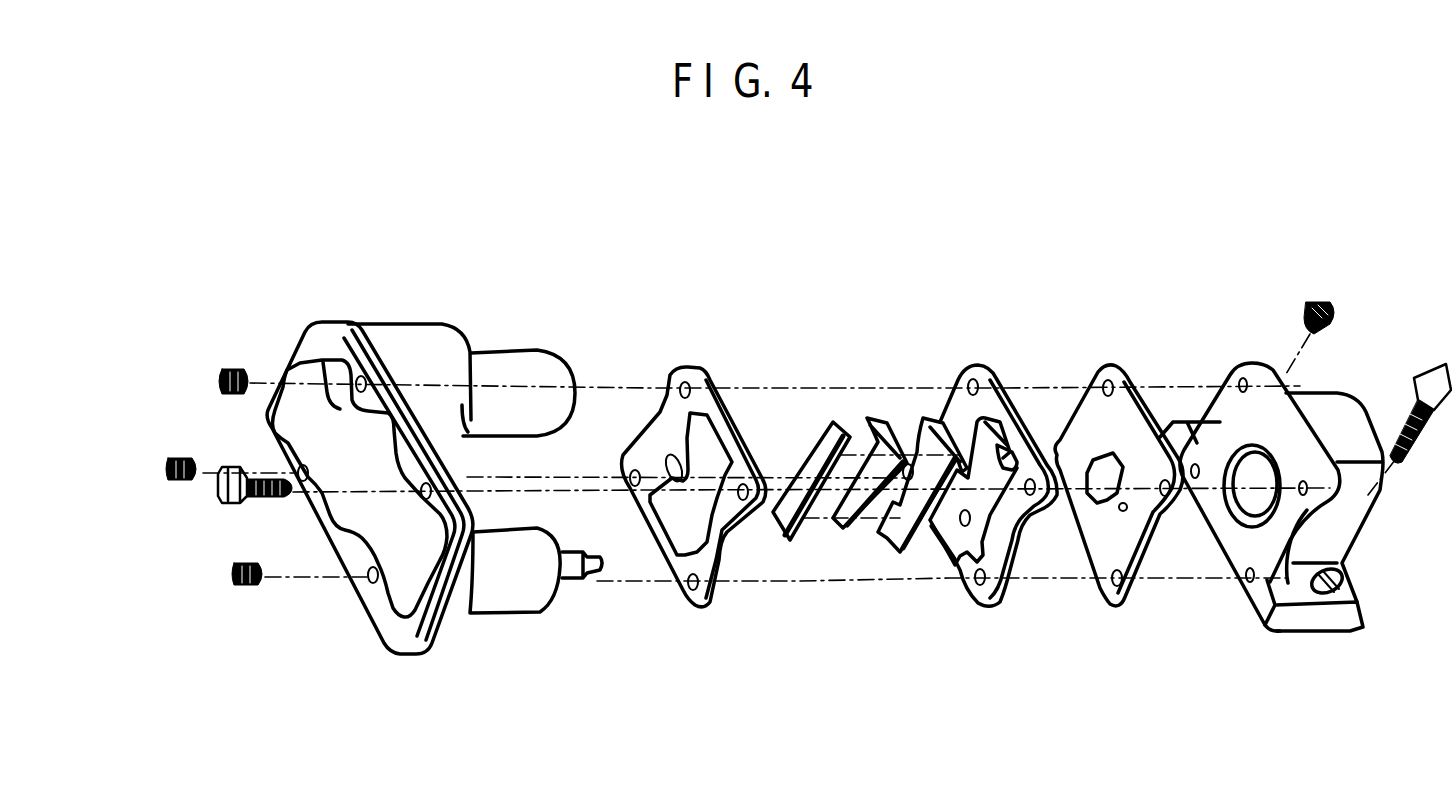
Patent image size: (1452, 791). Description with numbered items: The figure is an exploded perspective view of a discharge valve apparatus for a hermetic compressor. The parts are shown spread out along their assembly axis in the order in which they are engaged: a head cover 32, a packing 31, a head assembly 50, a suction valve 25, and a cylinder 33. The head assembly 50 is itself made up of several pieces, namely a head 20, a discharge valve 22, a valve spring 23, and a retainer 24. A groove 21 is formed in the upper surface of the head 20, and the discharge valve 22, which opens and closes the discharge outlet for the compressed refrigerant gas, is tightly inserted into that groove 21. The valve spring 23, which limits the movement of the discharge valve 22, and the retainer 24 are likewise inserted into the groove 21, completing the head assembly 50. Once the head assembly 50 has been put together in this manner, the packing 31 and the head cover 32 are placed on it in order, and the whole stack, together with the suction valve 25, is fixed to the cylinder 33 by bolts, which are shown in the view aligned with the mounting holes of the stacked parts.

The head 20 is at (985, 592).
The groove 21 is at (958, 575).
The discharge valve 22 is at (893, 552).
The valve spring 23 is at (840, 530).
The retainer 24 is at (780, 545).
The suction valve 25 is at (1108, 600).
The packing 31 is at (686, 604).
The head cover 32 is at (399, 640).
The cylinder 33 is at (1277, 630).
The head assembly 50 is at (945, 343).